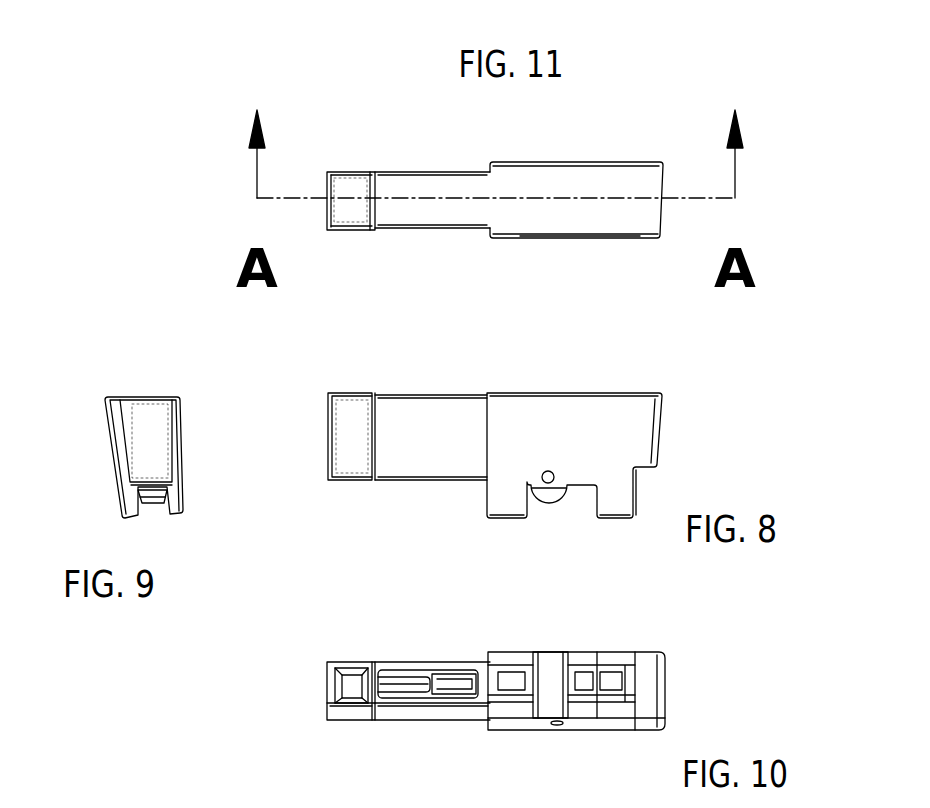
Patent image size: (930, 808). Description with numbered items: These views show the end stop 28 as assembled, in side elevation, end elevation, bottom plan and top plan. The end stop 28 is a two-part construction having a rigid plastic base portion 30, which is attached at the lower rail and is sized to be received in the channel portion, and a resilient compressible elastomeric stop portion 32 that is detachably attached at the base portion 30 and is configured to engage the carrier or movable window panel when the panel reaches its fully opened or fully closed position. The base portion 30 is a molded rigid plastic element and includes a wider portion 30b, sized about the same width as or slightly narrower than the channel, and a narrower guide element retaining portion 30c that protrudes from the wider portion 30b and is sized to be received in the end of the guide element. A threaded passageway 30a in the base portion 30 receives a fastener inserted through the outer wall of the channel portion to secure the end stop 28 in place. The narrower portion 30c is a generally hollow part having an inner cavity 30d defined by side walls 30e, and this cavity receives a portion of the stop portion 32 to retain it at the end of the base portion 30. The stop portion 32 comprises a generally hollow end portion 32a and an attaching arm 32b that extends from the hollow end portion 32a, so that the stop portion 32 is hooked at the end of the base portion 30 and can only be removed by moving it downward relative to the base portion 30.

In FIG. 11, the end stop 28 is at (338, 96).
In FIG. 8, the end stop 28 is at (690, 424).
In FIG. 9, the end stop 28 is at (82, 423).
In FIG. 10, the end stop 28 is at (315, 623).
In FIG. 11, the base portion 30 is at (467, 261).
In FIG. 8, the base portion 30 is at (537, 359).
In FIG. 10, the base portion 30 is at (602, 633).
In FIG. 8, the threaded passageway 30a is at (549, 483).
In FIG. 11, the wider portion 30b is at (575, 241).
In FIG. 8, the wider portion 30b is at (618, 413).
In FIG. 9, the wider portion 30b is at (183, 490).
In FIG. 10, the wider portion 30b is at (563, 731).
In FIG. 11, the narrower guide element retaining portion 30c is at (412, 230).
In FIG. 8, the narrower guide element retaining portion 30c is at (432, 460).
In FIG. 10, the narrower guide element retaining portion 30c is at (465, 720).
In FIG. 10, the inner cavity 30d is at (453, 684).
In FIG. 10, the side walls 30e is at (422, 702).
In FIG. 11, the stop portion 32 is at (336, 231).
In FIG. 8, the stop portion 32 is at (352, 462).
In FIG. 9, the stop portion 32 is at (145, 415).
In FIG. 10, the stop portion 32 is at (346, 736).
In FIG. 11, the hollow end portion 32a is at (347, 186).
In FIG. 8, the hollow end portion 32a is at (352, 408).
In FIG. 9, the hollow end portion 32a is at (152, 460).
In FIG. 10, the hollow end portion 32a is at (342, 692).
In FIG. 10, the arm 32b is at (402, 680).